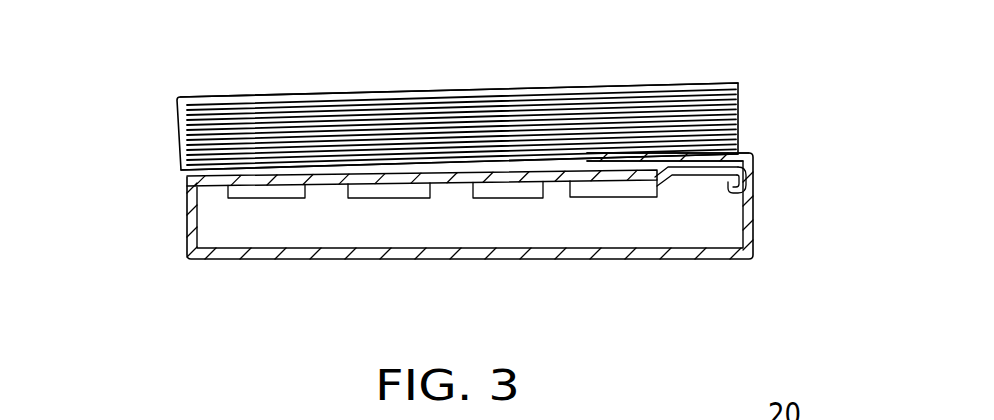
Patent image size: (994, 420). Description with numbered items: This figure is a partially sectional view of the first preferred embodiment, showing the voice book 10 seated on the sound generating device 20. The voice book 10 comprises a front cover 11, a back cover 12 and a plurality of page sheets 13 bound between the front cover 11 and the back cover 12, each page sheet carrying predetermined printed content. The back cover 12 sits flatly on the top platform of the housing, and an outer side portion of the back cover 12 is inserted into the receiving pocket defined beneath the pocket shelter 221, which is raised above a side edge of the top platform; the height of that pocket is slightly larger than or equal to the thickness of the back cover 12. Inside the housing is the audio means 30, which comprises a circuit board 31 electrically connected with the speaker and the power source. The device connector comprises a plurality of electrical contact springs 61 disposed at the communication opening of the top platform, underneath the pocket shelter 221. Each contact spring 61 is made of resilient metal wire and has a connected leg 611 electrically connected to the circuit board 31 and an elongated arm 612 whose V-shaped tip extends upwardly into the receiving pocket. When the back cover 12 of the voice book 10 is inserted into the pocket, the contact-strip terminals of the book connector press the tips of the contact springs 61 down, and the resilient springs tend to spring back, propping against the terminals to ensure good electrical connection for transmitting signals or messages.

The voice book 10 is at (400, 185).
The front cover 11 is at (338, 100).
The back cover 12 is at (557, 160).
The page sheets 13 is at (492, 127).
The sound generating device 20 is at (463, 199).
The pocket shelter 221 is at (740, 152).
The audio means 30 is at (452, 198).
The circuit board 31 is at (330, 187).
The electrical contact springs 61 is at (714, 247).
The connected leg 611 is at (595, 192).
The elongated arm 612 is at (744, 186).